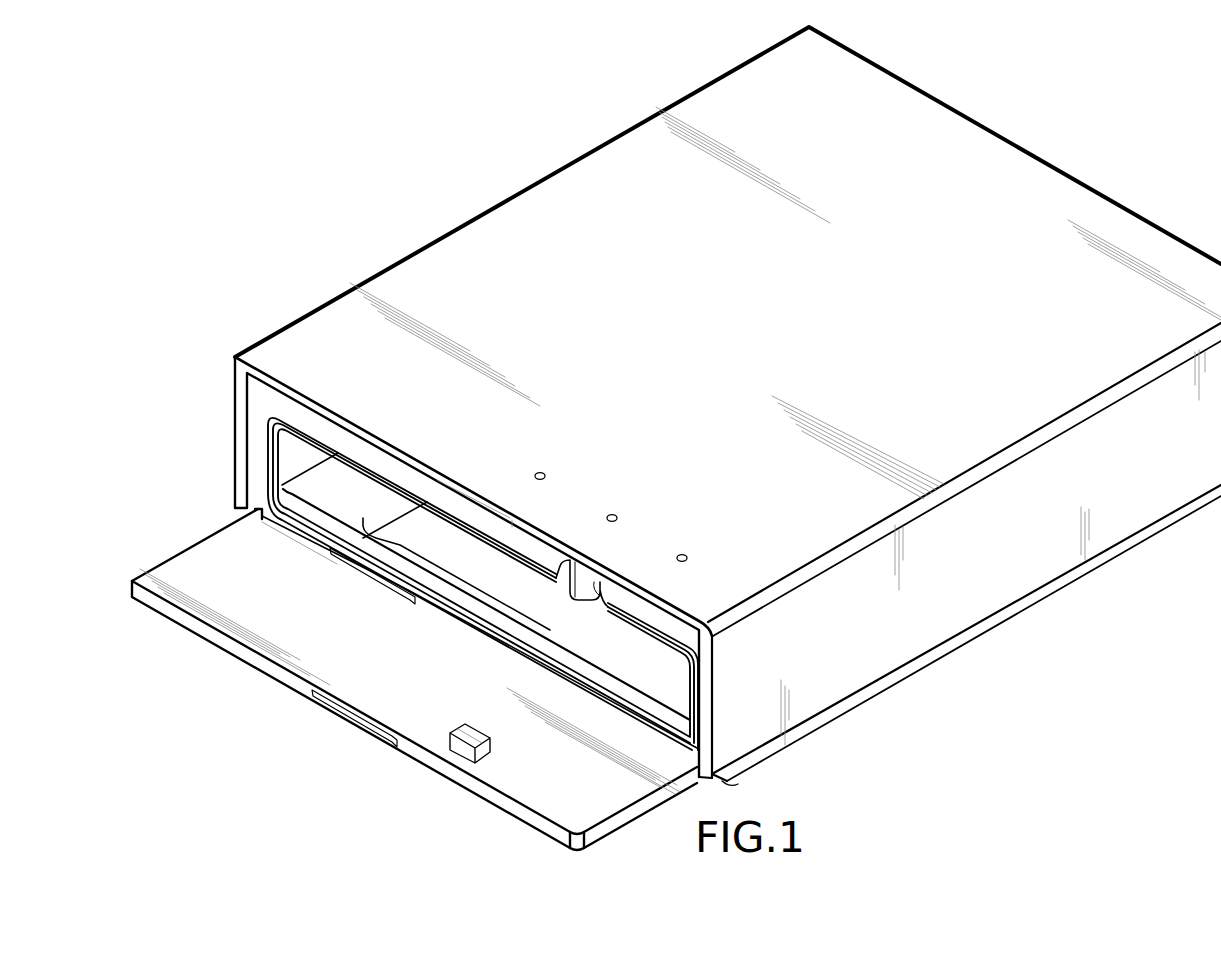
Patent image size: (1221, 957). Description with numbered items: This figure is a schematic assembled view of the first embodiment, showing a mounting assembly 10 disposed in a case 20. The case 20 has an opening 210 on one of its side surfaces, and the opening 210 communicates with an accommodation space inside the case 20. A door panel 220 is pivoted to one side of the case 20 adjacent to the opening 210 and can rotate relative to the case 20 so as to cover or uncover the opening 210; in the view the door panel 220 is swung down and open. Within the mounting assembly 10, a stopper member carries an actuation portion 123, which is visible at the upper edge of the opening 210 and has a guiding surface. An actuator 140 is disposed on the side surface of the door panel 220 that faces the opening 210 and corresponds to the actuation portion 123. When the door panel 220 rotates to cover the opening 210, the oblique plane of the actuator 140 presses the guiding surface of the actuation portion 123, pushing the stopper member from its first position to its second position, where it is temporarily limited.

The mounting assembly 10 is at (414, 679).
The case 20 is at (418, 229).
The actuation portion 123 is at (582, 594).
The actuator 140 is at (463, 749).
The opening 210 is at (290, 456).
The door panel 220 is at (286, 650).